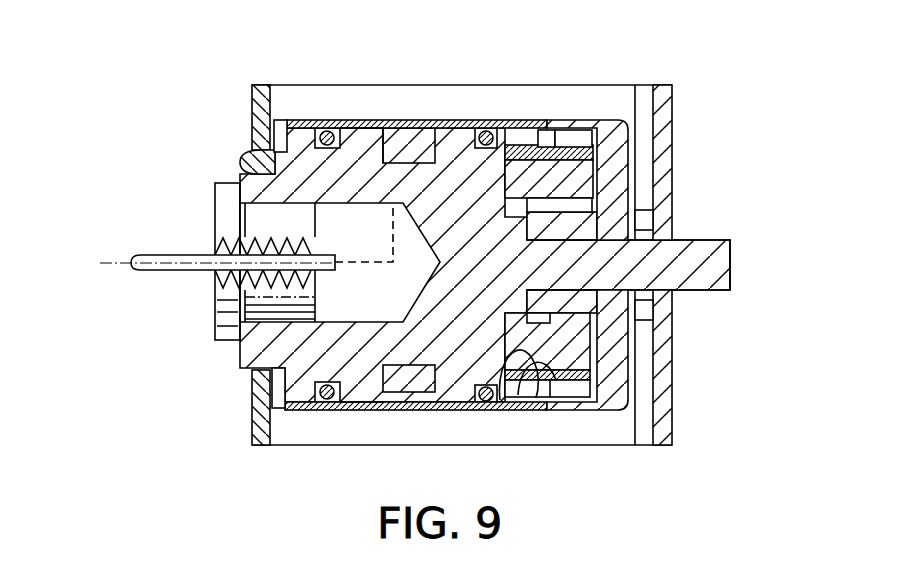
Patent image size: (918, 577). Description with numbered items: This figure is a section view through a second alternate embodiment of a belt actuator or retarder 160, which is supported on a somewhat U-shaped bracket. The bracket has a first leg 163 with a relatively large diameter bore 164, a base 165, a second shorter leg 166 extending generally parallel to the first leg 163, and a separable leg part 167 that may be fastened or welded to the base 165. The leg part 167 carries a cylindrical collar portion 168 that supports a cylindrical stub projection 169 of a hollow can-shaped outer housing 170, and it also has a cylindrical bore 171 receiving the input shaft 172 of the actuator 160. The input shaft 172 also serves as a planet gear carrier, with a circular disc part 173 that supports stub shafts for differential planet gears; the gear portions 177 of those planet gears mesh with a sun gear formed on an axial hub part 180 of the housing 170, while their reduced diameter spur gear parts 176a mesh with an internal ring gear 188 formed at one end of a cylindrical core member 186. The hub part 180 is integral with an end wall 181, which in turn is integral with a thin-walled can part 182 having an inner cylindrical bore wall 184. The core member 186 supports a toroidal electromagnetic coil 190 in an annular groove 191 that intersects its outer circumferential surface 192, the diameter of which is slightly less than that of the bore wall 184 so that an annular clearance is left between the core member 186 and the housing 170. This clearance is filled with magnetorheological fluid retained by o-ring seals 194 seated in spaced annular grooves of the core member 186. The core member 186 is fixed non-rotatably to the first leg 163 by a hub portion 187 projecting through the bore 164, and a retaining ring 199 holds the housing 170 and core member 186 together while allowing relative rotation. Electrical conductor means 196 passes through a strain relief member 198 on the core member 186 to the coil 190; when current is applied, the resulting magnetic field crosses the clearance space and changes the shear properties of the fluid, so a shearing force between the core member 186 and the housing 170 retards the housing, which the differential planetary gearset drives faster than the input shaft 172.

The belt actuator or retarder 160 is at (362, 62).
The first leg 163 is at (250, 90).
The bore 164 is at (240, 163).
The base 165 is at (305, 448).
The second shorter leg 166 is at (643, 366).
The separable leg part 167 is at (673, 112).
The cylindrical collar portion 168 is at (645, 205).
The stub projection 169 is at (644, 334).
The outer housing 170 is at (486, 128).
The cylindrical bore 171 is at (731, 270).
The input shaft 172 is at (730, 243).
The circular disc part 173 is at (508, 380).
The reduced diameter spur gear parts 176a is at (520, 146).
The gear portions 177 is at (565, 122).
The axial hub part 180 is at (617, 205).
The end wall 181 is at (621, 412).
The can part 182 is at (389, 400).
The inner cylindrical bore wall 184 is at (354, 412).
The core member 186 is at (466, 405).
The hub portion 187 is at (238, 362).
The internal ring gear 188 is at (532, 408).
The toroidal electromagnetic coil 190 is at (427, 130).
The annular groove 191 is at (388, 128).
The outer circumferential surface 192 is at (366, 122).
The o-ring seals 194 is at (318, 127).
The electrical conductor means 196 is at (171, 273).
The strain relief member 198 is at (215, 322).
The retaining ring 199 is at (280, 412).